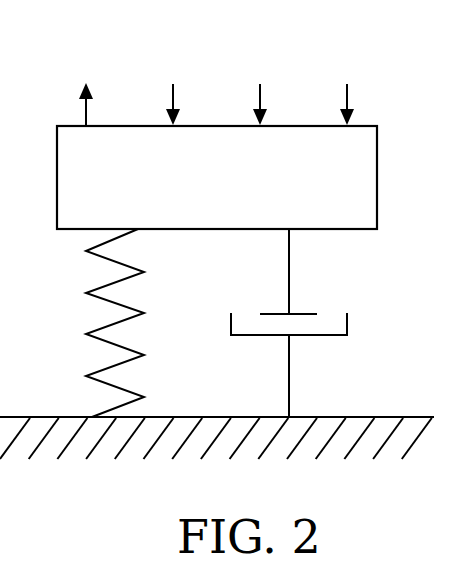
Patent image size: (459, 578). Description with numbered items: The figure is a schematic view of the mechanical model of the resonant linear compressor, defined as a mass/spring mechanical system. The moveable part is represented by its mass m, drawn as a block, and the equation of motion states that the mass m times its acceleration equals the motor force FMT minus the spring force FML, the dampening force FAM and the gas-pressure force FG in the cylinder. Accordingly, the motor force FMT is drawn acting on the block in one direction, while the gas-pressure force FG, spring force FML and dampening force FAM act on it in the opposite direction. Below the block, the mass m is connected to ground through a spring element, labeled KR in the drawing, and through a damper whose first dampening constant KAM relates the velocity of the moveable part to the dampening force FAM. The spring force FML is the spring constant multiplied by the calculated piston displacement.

The motor force FMT is at (81, 71).
The gas-pressure force FG is at (163, 71).
The spring force FML is at (253, 71).
The dampening force FAM is at (340, 71).
The mass of the moveable part m is at (217, 177).
The spring stiffness KR is at (83, 323).
The first dampening constant KAM is at (328, 323).